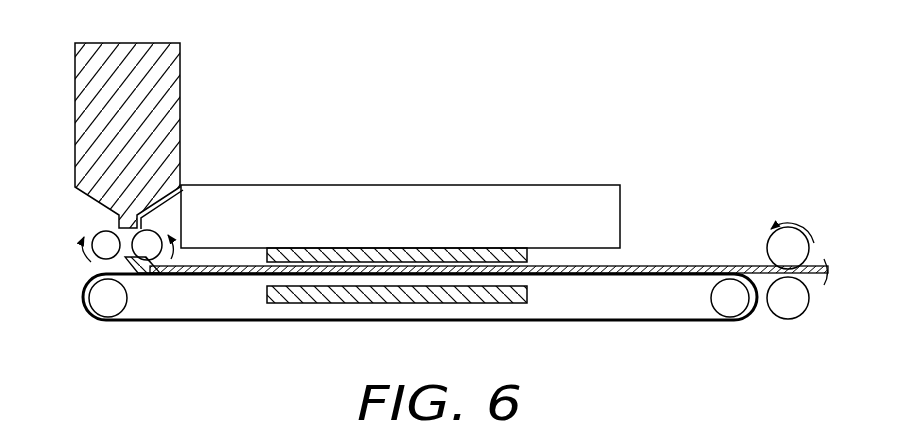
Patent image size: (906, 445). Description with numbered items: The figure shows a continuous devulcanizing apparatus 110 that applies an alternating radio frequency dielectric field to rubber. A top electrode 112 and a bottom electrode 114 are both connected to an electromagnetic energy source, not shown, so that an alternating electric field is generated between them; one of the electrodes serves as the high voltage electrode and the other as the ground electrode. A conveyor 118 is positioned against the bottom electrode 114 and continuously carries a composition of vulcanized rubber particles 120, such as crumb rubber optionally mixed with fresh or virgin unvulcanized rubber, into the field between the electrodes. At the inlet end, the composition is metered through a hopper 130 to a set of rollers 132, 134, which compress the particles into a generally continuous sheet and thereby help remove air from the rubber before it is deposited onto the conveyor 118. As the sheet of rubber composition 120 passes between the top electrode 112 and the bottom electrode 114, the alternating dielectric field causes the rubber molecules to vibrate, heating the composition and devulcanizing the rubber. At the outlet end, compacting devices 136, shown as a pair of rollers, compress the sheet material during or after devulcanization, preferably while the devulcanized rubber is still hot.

The devulcanizing apparatus 110 is at (560, 110).
The top electrode 112 is at (442, 252).
The bottom electrode 114 is at (470, 304).
The conveyor 118 is at (645, 324).
The vulcanized rubber particles 120 is at (233, 270).
The hopper 130 is at (172, 71).
The roller 132 is at (107, 251).
The roller 134 is at (148, 237).
The compacting devices 136 is at (797, 251).